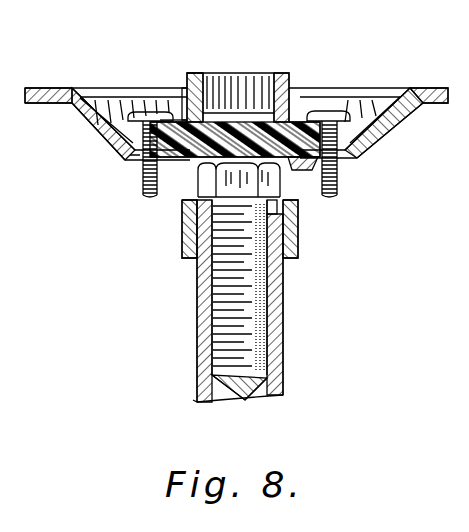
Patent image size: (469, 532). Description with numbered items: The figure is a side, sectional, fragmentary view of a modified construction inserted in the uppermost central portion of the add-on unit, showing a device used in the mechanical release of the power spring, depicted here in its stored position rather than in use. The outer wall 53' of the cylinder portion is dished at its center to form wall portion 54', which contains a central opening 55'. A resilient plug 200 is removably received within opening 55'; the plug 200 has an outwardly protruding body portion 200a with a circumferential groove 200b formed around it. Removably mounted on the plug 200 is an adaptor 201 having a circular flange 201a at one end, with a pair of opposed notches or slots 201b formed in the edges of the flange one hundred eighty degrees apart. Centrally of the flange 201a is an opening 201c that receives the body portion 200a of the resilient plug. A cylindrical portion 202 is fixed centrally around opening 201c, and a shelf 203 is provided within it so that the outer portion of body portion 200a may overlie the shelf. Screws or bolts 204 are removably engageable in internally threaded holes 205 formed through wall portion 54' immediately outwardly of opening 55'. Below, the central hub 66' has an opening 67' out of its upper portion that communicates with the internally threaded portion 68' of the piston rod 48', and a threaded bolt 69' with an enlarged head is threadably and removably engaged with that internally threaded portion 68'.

The outer wall 53' is at (236, 107).
The wall portion 54' is at (373, 100).
The opening 55' is at (301, 175).
The central hub 66' is at (311, 229).
The opening 67' is at (300, 210).
The internally threaded portion 68' is at (205, 288).
The threaded bolt 69' is at (167, 229).
The piston rod 48' is at (257, 301).
The resilient plug 200 is at (252, 133).
The body portion 200a is at (241, 147).
The circumferential groove 200b is at (294, 86).
The adaptor 201 is at (181, 117).
The circular flange 201a is at (205, 193).
The notches or slots 201b is at (138, 135).
The opening 201c is at (222, 118).
The cylindrical portion 202 is at (189, 73).
The shelf 203 is at (181, 110).
The screws or bolts 204 is at (143, 181).
The internally threaded holes 205 is at (345, 152).